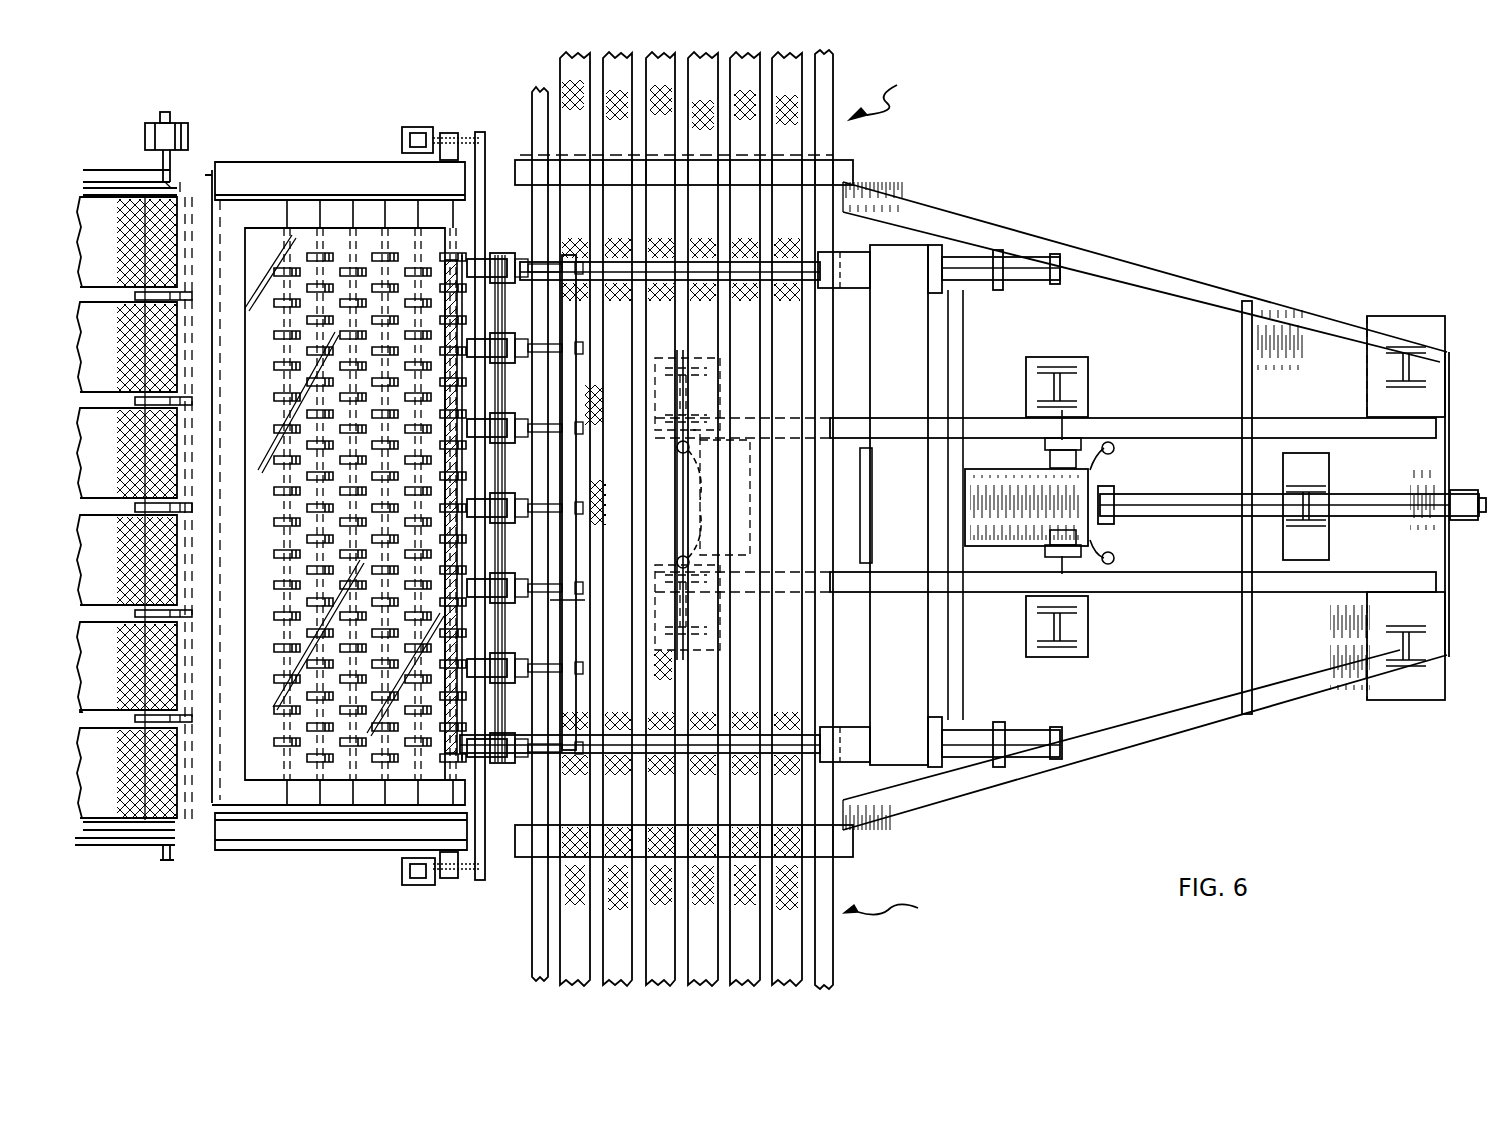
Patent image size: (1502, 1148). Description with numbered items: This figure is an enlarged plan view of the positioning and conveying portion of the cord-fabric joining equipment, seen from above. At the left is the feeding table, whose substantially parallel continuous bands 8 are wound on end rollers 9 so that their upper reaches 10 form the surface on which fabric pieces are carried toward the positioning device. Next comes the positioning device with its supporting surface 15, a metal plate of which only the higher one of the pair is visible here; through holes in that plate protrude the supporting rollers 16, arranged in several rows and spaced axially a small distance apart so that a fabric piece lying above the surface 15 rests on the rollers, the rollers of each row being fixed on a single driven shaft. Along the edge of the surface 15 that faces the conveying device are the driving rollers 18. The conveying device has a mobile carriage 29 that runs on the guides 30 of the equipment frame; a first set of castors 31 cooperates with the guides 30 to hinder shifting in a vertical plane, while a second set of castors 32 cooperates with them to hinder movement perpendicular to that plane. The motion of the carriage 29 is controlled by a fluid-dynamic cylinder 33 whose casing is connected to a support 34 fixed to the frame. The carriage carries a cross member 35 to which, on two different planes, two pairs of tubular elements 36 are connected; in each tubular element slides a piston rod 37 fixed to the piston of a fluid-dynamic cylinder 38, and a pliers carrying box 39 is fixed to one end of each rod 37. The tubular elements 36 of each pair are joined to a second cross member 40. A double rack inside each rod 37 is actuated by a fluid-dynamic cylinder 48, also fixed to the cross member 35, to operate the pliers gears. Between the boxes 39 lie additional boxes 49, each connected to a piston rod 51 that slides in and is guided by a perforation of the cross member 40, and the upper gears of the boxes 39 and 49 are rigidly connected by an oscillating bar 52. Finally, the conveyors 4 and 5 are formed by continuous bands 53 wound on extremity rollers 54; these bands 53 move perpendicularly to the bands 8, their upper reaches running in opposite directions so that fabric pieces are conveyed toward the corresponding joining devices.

The conveyor 4 is at (892, 912).
The conveyor 5 is at (881, 91).
The continuous bands 8 is at (115, 200).
The end rollers 9 is at (140, 482).
The upper reaches 10 is at (130, 190).
The supporting surface 15 is at (255, 235).
The supporting roller 16 is at (312, 287).
The driving rollers 18 is at (363, 270).
The carriage 29 is at (982, 465).
The guides 30 is at (1195, 395).
The first set of castors 31 is at (735, 430).
The second set of castors 32 is at (1116, 450).
The fluid-dynamic cylinder 33 is at (1228, 505).
The support 34 is at (1335, 545).
The cross member 35 is at (900, 258).
The tubular elements 36 is at (645, 270).
The piston rod 37 is at (470, 140).
The fluid-dynamic cylinder 38 is at (860, 250).
The pliers carrying box 39 is at (452, 372).
The second cross member 40 is at (570, 312).
The fluid-dynamic cylinder 48 is at (1025, 268).
The box 49 is at (450, 277).
The piston rod 51 is at (545, 395).
The bar 52 is at (540, 595).
The continuous bands 53 is at (797, 94).
The extremity rollers 54 is at (808, 168).